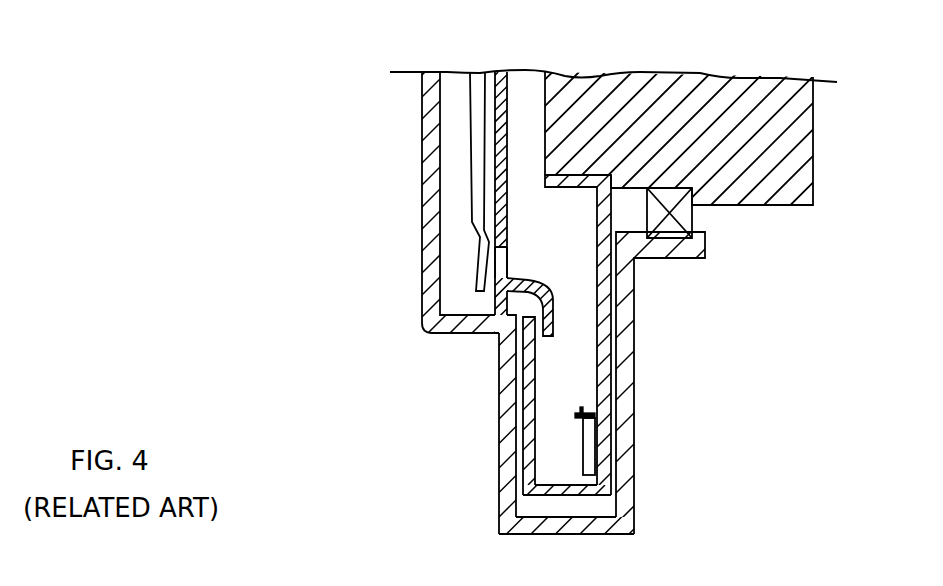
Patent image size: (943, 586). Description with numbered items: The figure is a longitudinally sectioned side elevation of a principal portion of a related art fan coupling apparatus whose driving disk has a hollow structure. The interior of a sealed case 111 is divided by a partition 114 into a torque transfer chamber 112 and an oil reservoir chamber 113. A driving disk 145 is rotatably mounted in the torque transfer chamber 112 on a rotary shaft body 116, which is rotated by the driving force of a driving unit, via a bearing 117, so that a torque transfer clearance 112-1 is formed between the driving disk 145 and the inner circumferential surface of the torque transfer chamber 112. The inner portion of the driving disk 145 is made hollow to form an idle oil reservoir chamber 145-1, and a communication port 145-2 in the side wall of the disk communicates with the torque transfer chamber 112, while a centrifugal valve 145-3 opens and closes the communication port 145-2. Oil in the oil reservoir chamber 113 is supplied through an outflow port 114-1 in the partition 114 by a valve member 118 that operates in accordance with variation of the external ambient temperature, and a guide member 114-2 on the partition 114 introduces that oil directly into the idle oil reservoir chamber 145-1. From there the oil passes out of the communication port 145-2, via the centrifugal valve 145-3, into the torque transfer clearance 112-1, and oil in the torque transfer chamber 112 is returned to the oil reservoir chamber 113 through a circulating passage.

The sealed case 111 is at (625, 405).
The torque transfer chamber 112 is at (611, 332).
The torque transfer clearance 112-1 is at (516, 483).
The oil reservoir chamber 113 is at (455, 270).
The partition 114 is at (506, 72).
The outflow port 114-1 is at (497, 265).
The guide member 114-2 is at (555, 302).
The rotary shaft body 116 is at (733, 100).
The bearing 117 is at (692, 222).
The valve member 118 is at (470, 171).
The driving disk 145 is at (565, 502).
The idle oil reservoir chamber 145-1 is at (553, 395).
The communication port 145-2 is at (603, 461).
The centrifugal valve 145-3 is at (584, 456).